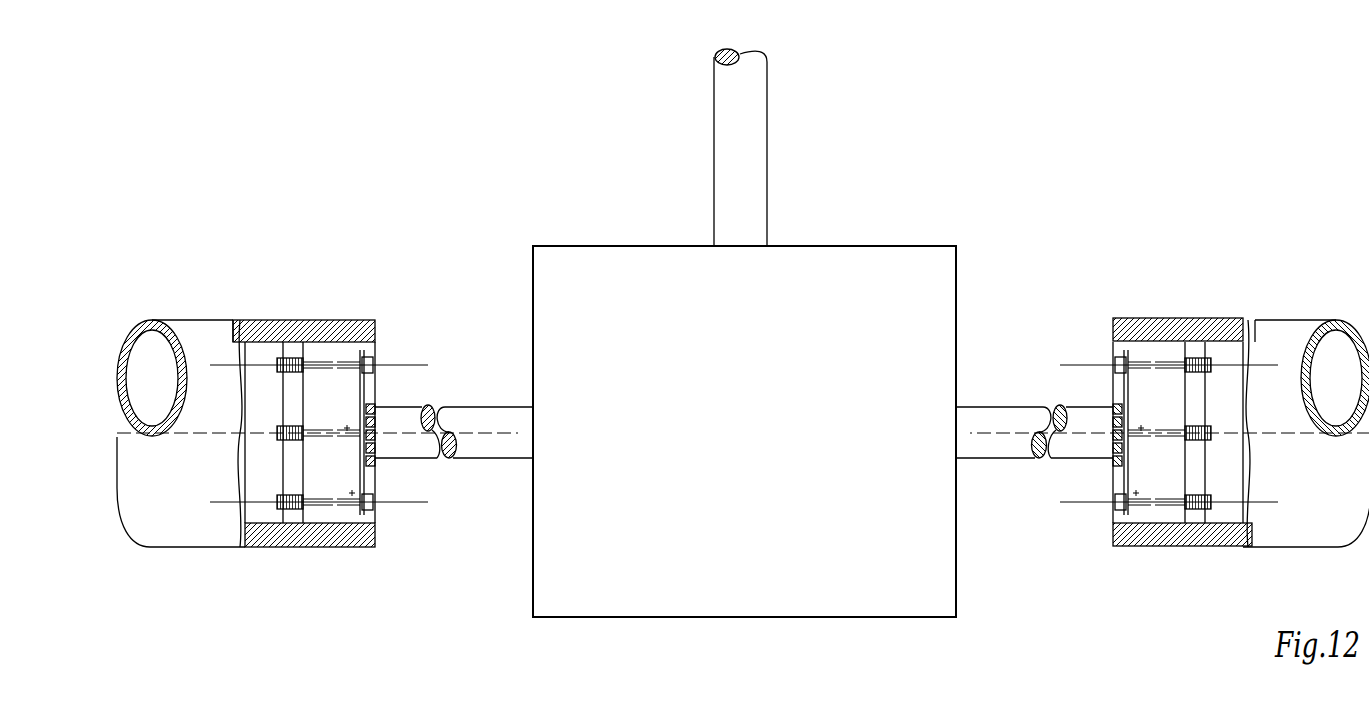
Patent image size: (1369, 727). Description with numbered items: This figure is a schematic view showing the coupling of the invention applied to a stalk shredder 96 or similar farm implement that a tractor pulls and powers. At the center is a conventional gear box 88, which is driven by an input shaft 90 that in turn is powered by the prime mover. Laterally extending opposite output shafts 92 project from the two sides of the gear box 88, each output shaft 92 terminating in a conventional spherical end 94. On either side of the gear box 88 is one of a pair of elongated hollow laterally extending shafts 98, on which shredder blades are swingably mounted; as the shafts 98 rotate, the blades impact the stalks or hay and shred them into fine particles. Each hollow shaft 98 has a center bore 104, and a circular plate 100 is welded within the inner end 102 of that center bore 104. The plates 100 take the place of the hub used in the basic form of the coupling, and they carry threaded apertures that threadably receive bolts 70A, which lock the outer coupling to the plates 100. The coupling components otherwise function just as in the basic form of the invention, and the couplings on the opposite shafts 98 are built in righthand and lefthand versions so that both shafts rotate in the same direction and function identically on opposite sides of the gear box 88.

The bolts 70A is at (352, 407).
The gear box 88 is at (853, 246).
The input shaft 90 is at (763, 148).
The output shafts 92 is at (493, 410).
The spherical ends 94 is at (380, 447).
The stalk shredder 96 is at (405, 287).
The hollow laterally extending shafts 98 is at (210, 320).
The circular plate 100 is at (290, 462).
The inner ends 102 is at (375, 535).
The center bore 104 is at (347, 342).